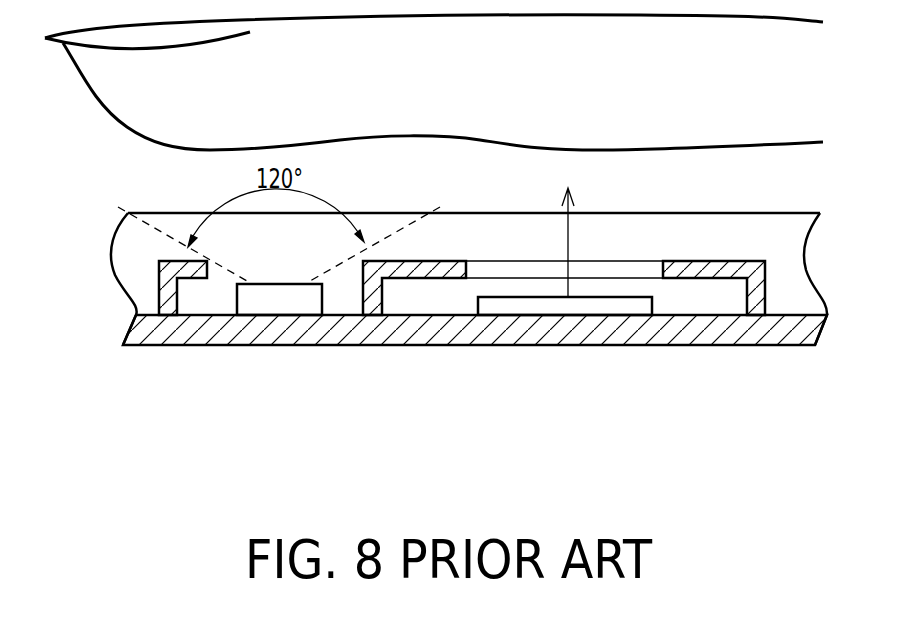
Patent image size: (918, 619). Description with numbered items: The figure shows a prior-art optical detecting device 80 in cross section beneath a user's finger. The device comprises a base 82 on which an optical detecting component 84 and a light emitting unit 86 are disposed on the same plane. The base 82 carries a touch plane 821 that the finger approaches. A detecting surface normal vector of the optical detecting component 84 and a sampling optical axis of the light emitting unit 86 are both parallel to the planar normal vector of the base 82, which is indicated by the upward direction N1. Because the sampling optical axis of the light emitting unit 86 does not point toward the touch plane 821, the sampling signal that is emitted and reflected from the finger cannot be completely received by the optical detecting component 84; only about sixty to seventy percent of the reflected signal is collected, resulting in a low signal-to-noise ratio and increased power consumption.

The optical detecting device 80 is at (160, 175).
The base 82 is at (716, 328).
The touch plane 821 is at (531, 238).
The optical detecting component 84 is at (623, 303).
The light emitting unit 86 is at (273, 346).
The normal direction N1 is at (567, 225).